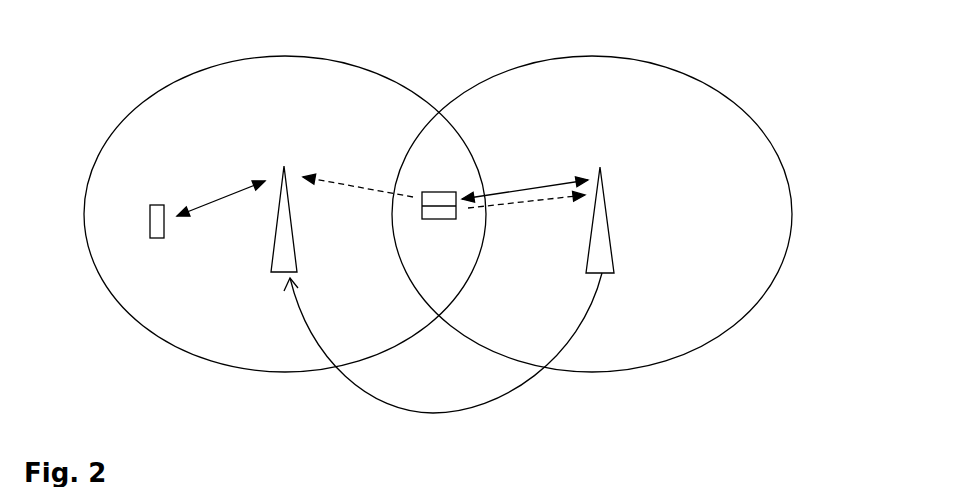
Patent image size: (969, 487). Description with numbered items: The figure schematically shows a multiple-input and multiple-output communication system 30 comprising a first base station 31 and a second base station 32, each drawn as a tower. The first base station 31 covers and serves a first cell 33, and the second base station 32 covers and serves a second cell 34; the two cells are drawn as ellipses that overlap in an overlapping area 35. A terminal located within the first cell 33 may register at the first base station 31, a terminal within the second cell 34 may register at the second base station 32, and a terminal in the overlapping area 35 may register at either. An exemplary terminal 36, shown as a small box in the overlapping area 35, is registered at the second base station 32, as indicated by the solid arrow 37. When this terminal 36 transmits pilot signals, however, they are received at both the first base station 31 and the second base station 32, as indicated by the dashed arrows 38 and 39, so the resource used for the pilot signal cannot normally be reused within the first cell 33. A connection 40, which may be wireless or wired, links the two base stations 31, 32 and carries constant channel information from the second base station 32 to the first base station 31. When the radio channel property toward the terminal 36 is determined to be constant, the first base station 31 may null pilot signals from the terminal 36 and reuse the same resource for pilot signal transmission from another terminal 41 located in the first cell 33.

The multiple-input and multiple-output communication system 30 is at (768, 63).
The first base station 31 is at (272, 245).
The second base station 32 is at (610, 195).
The first cell 33 is at (162, 88).
The second cell 34 is at (713, 342).
The overlapping area 35 is at (432, 143).
The terminal 36 is at (435, 220).
The solid arrow 37 is at (538, 185).
The arrow 38 is at (338, 180).
The arrow 39 is at (515, 206).
The connection 40 is at (522, 395).
The terminal 41 is at (155, 240).